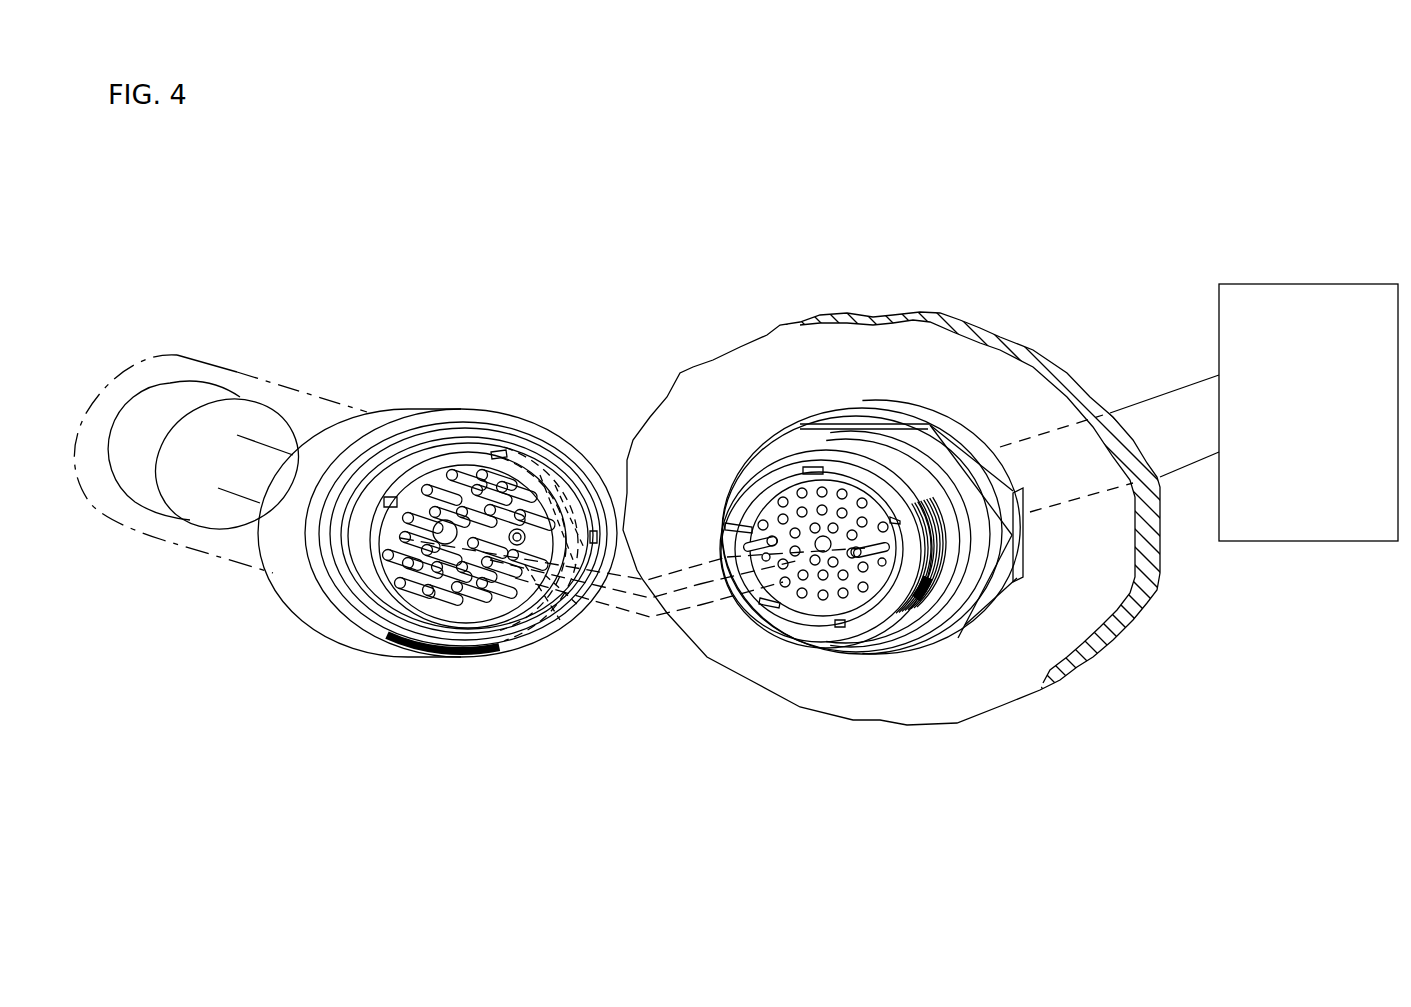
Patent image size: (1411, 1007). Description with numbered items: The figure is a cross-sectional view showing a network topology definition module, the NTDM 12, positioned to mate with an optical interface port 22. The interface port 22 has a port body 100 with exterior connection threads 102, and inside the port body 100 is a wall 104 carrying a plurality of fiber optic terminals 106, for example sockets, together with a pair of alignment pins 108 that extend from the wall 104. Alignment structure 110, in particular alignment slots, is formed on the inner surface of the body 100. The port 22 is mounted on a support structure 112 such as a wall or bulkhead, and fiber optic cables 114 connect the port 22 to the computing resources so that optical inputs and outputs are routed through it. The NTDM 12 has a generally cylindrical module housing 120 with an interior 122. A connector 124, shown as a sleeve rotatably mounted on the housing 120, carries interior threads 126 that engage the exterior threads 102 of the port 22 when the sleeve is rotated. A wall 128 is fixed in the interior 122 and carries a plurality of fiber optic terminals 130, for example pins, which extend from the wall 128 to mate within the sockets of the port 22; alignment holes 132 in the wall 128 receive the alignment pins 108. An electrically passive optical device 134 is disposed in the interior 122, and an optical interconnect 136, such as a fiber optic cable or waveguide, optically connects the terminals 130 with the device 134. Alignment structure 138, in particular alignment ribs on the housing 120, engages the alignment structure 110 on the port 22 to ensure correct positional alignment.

The NTDM 12 is at (392, 362).
The interface port 22 is at (851, 440).
The port body 100 is at (770, 613).
The exterior connection threads 102 is at (920, 595).
The wall 104 is at (875, 577).
The fiber optic terminals 106 is at (823, 600).
The alignment pins 108 is at (858, 550).
The alignment structure 110 is at (810, 463).
The support structure 112 is at (977, 338).
The fiber optic cables 114 is at (1157, 393).
The module housing 120 is at (305, 388).
The interior 122 is at (233, 375).
The connector 124 is at (448, 413).
The interior threads 126 is at (533, 580).
The wall 128 is at (447, 583).
The fiber optic terminals 130 is at (520, 512).
The alignment holes 132 is at (523, 533).
The electrically passive optical device 134 is at (134, 494).
The optical interconnect 136 is at (253, 500).
The alignment structure 138 is at (507, 453).